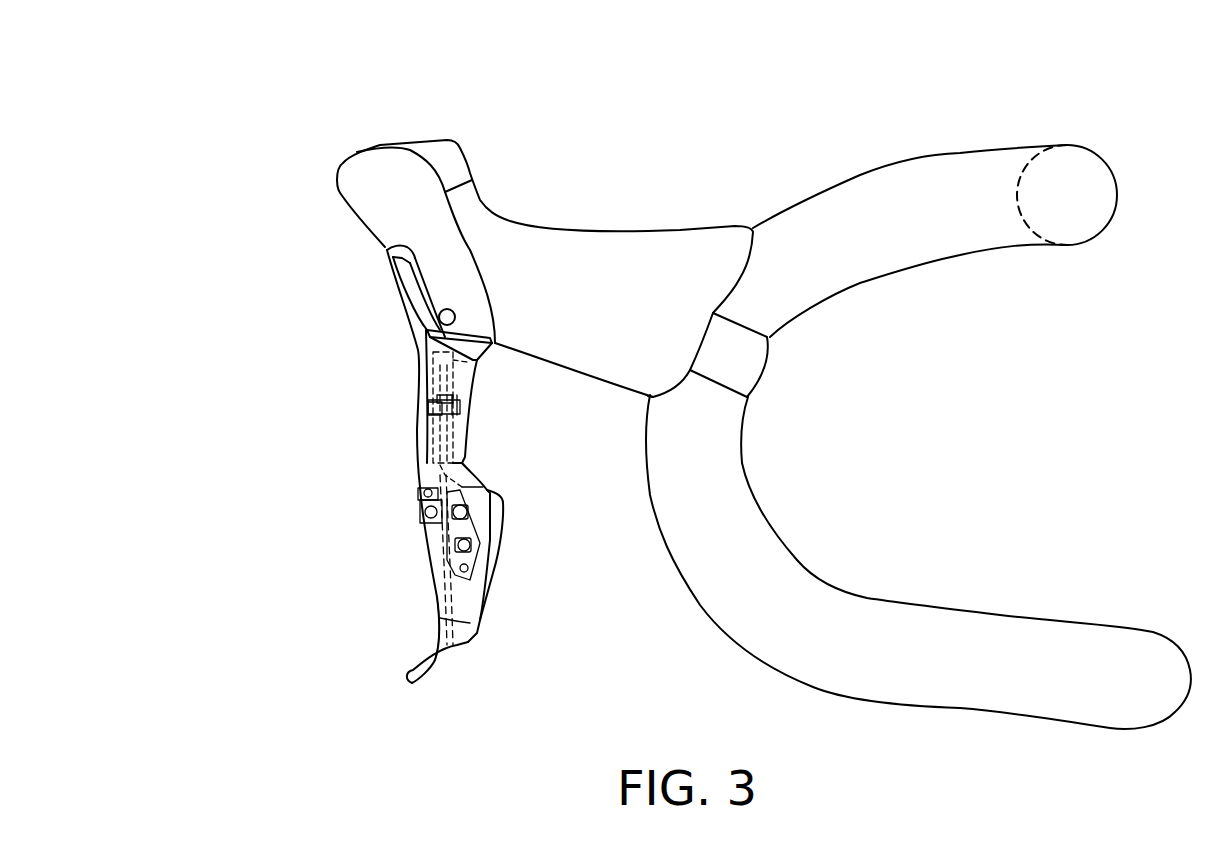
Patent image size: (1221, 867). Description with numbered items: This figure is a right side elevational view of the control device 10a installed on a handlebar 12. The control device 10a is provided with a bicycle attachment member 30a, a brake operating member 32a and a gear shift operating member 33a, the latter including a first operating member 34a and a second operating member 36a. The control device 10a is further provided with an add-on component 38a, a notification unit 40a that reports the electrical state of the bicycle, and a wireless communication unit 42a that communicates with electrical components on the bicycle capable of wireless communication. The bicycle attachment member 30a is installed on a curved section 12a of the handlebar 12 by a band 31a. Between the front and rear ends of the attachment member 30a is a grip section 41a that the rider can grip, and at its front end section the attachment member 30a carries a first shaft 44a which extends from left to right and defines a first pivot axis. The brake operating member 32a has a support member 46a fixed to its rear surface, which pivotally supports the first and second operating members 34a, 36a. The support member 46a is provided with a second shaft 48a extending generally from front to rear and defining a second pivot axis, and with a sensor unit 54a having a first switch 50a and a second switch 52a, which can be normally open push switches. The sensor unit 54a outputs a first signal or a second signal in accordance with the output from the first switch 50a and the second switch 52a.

The control device 10a is at (490, 137).
The handlebar 12 is at (961, 144).
The curved section 12a is at (653, 445).
The bicycle attachment member 30a is at (682, 226).
The band 31a is at (730, 357).
The brake operating member 32a is at (423, 367).
The gear shift operating member 33a is at (308, 573).
The first operating member 34a is at (470, 623).
The second operating member 36a is at (430, 553).
The add-on component 38a is at (423, 522).
The notification unit 40a is at (423, 492).
The grip section 41a is at (657, 267).
The wireless communication unit 42a is at (437, 483).
The first shaft 44a is at (385, 247).
The support member 46a is at (467, 362).
The second shaft 48a is at (430, 425).
The first switch 50a is at (477, 553).
The second switch 52a is at (478, 533).
The sensor unit 54a is at (580, 483).